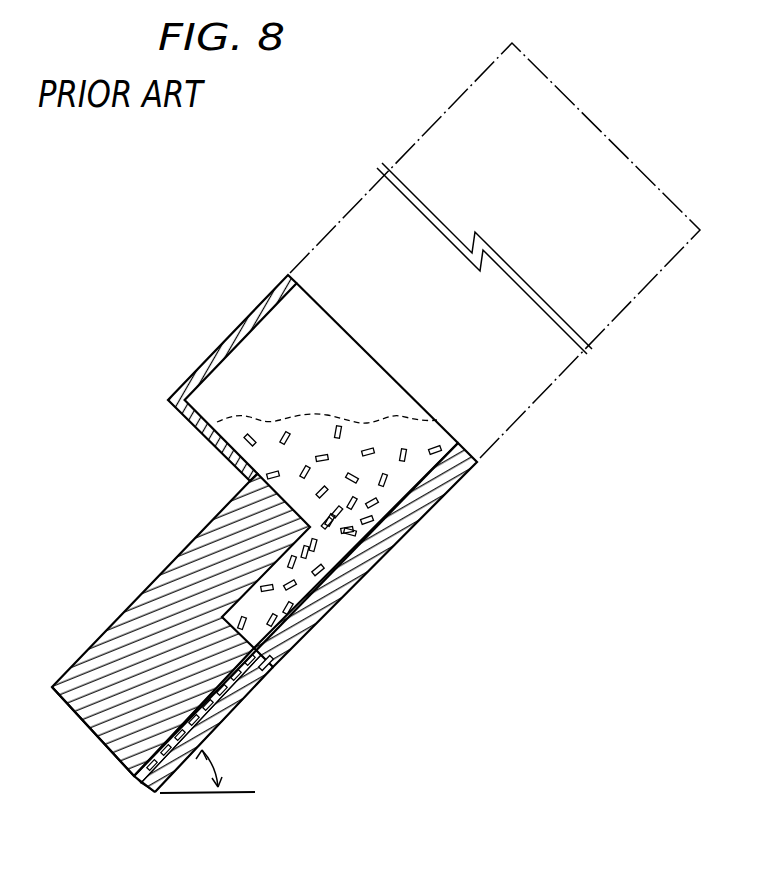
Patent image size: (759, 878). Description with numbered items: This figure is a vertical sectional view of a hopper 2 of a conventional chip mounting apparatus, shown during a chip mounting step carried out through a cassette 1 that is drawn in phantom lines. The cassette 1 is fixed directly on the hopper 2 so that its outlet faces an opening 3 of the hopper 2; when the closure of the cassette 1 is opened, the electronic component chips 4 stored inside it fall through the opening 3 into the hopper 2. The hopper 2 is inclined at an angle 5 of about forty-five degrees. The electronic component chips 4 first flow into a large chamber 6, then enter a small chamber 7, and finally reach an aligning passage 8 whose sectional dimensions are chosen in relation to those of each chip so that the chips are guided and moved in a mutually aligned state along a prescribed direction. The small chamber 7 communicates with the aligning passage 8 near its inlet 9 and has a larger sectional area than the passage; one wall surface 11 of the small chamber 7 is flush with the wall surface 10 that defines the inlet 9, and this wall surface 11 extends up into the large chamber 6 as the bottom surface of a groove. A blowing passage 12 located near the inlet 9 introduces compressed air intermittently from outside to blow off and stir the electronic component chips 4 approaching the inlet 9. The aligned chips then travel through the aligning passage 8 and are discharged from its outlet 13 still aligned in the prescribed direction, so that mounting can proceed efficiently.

The cassette 1 is at (537, 63).
The hopper 2 is at (263, 331).
The opening 3 is at (320, 306).
The electronic component chips 4 is at (402, 468).
The angle of inclination 5 is at (220, 783).
The large chamber 6 is at (243, 363).
The small chamber 7 is at (245, 598).
The aligning passage 8 is at (185, 715).
The inlet 9 is at (250, 645).
The wall surface 10 is at (243, 700).
The wall surface 11 is at (477, 464).
The blowing passage 12 is at (268, 664).
The outlet 13 is at (132, 779).